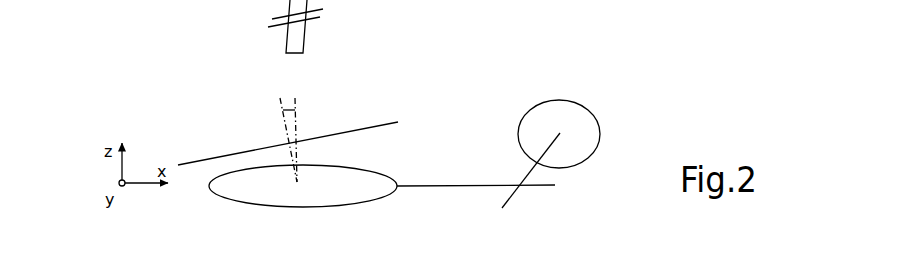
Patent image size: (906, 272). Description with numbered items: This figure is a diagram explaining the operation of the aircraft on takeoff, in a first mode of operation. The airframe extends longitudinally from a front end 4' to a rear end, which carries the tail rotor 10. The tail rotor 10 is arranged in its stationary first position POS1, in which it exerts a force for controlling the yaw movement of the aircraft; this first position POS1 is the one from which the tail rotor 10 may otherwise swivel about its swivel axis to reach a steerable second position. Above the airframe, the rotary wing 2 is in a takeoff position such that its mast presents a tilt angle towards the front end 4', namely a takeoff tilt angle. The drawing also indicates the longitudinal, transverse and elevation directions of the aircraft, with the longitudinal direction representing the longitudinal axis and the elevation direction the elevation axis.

The rotary wing 2 is at (378, 112).
The front end 4' is at (277, 218).
The tail rotor 10 is at (590, 93).
The first position POS1 is at (606, 100).